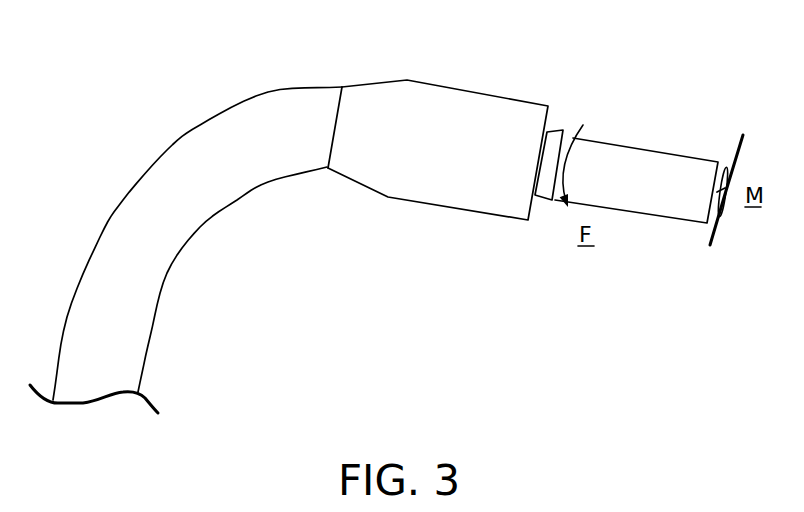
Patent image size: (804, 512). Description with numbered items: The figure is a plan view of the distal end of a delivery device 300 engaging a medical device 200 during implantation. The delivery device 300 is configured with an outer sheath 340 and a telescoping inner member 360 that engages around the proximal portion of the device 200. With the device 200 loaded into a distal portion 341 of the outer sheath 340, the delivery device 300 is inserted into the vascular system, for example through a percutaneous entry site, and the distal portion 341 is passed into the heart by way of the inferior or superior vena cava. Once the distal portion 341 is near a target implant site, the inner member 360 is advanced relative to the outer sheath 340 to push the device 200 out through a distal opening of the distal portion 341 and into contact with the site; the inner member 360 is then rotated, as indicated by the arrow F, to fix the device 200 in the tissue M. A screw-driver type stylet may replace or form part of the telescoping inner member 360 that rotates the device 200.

The delivery device 300 is at (170, 62).
The outer sheath 340 is at (290, 74).
The distal portion 341 is at (478, 113).
The telescoping inner member 360 is at (552, 133).
The device 200 is at (668, 128).